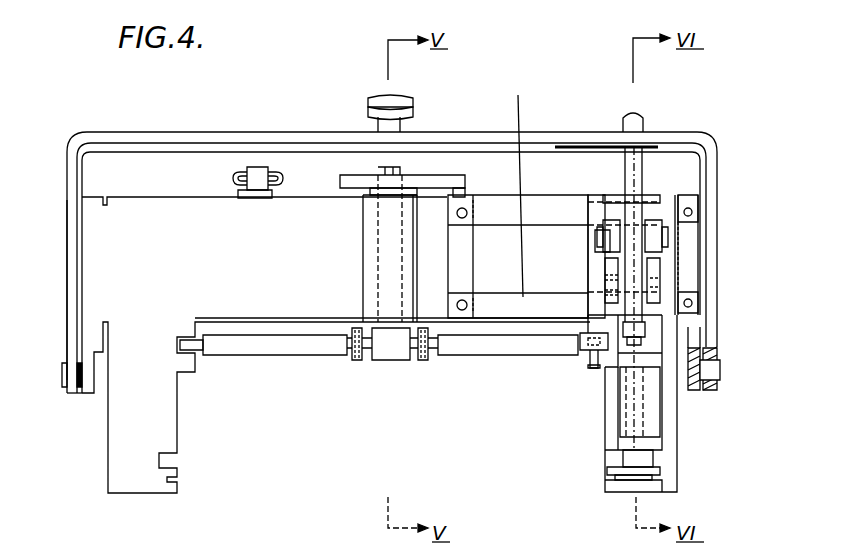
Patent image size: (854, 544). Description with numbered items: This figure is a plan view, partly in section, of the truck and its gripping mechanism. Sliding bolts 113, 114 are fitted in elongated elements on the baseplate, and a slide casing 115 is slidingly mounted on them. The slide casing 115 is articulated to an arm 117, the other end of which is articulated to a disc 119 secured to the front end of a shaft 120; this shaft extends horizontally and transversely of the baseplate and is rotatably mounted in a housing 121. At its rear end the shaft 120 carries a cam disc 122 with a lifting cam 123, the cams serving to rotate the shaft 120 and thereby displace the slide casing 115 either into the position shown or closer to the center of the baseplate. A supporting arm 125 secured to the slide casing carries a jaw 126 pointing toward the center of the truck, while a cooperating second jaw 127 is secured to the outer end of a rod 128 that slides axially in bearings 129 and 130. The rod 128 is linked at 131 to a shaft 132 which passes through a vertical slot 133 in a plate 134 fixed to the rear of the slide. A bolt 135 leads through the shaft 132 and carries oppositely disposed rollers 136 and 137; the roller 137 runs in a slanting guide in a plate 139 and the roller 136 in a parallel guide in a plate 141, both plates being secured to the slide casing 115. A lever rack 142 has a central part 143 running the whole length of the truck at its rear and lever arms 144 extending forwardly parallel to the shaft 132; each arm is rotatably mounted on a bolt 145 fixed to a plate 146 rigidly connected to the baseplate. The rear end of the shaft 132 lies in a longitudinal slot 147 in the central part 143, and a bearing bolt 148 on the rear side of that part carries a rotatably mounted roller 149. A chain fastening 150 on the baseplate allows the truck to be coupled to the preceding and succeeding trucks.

The sliding bolt 113 is at (522, 182).
The sliding bolt 114 is at (565, 207).
The slide casing 115 is at (592, 241).
The arm 117 is at (484, 351).
The disc 119 is at (372, 361).
The shaft 120 is at (376, 246).
The housing 121 is at (364, 273).
The cam disc 122 is at (455, 178).
The lifting cam 123 is at (338, 177).
The supporting arm 125 is at (678, 423).
The jaw 126 is at (607, 488).
The second jaw 127 is at (654, 470).
The rod 128 is at (627, 457).
The bearing 129 is at (625, 441).
The bearing 130 is at (623, 355).
The link 131 is at (645, 329).
The shaft 132 is at (655, 290).
The vertical slot 133 is at (640, 208).
The plate 134 is at (652, 232).
The bolt 135 is at (664, 253).
The roller 136 is at (664, 233).
The roller 137 is at (612, 226).
The plate 139 is at (613, 302).
The plate 141 is at (645, 270).
The lever rack 142 is at (667, 130).
The central part 143 is at (240, 137).
The lever arm 144 is at (70, 277).
The bolt 145 is at (720, 378).
The plate 146 is at (698, 388).
The longitudinal slot 147 is at (595, 145).
The bearing bolt 148 is at (390, 123).
The roller 149 is at (408, 105).
The chain fastening 150 is at (258, 182).